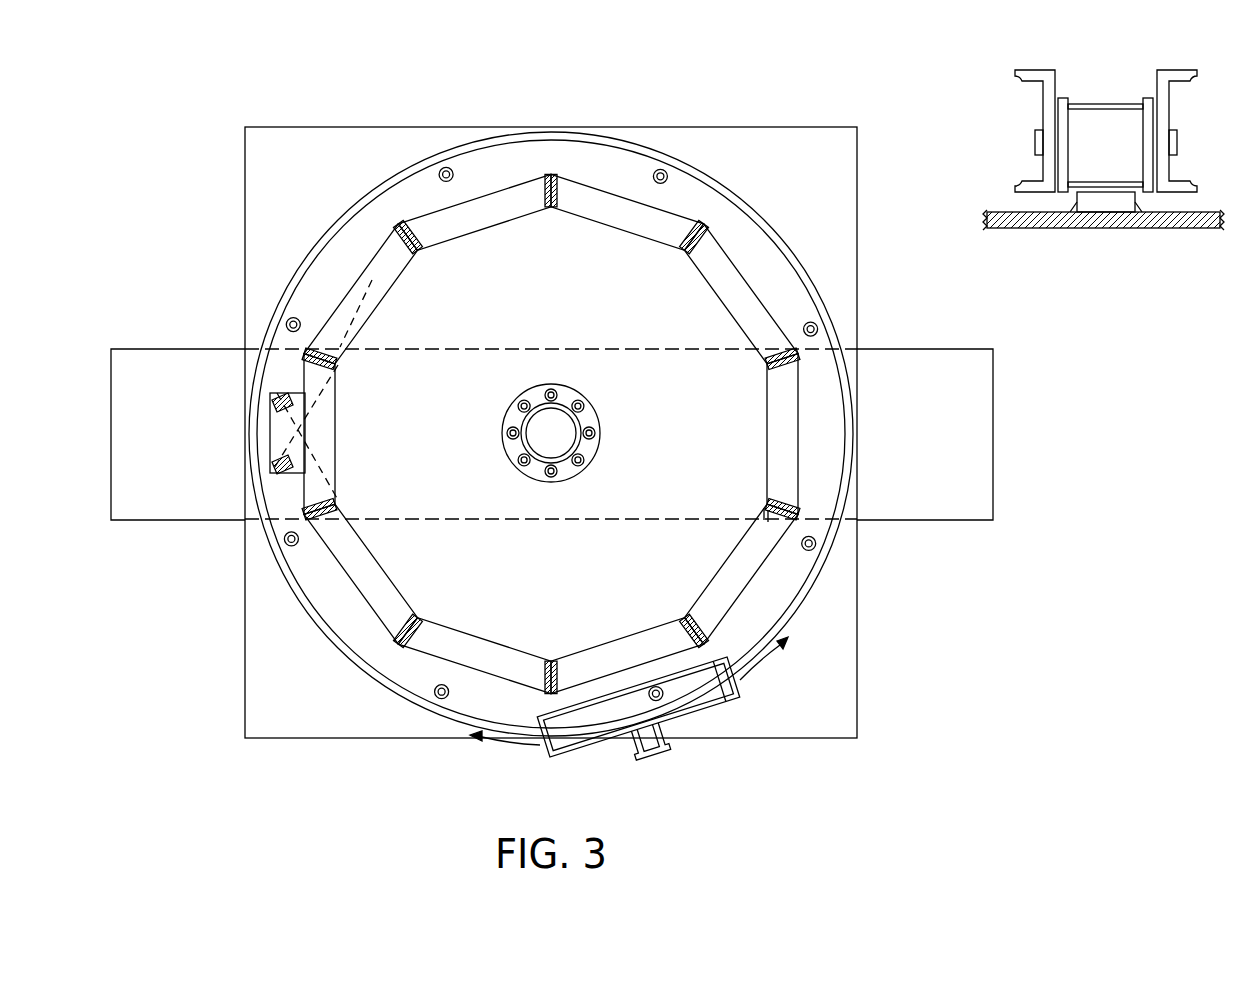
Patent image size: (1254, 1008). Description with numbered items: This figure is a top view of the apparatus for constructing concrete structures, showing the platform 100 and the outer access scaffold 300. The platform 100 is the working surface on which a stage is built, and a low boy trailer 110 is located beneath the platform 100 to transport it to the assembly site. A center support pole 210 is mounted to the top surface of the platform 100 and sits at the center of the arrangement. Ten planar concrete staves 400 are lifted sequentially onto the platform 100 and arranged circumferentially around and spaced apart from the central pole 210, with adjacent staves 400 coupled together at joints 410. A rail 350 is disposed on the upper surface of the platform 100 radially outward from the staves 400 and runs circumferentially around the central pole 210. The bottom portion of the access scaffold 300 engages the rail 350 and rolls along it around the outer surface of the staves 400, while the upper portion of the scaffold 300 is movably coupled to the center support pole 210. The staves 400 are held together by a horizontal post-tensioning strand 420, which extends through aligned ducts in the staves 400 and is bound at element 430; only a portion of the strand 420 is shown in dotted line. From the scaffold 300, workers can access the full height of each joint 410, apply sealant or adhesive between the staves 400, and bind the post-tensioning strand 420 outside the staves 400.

The platform 100 is at (859, 224).
The low boy trailer 110 is at (985, 458).
The central pole 210 is at (543, 445).
The outer access scaffold 300 is at (740, 692).
The rail 350 is at (788, 617).
The concrete staves 400 is at (750, 562).
The joint 410 is at (820, 513).
The horizontal post-tensioning strand 420 is at (355, 315).
The binding element 430 is at (276, 430).